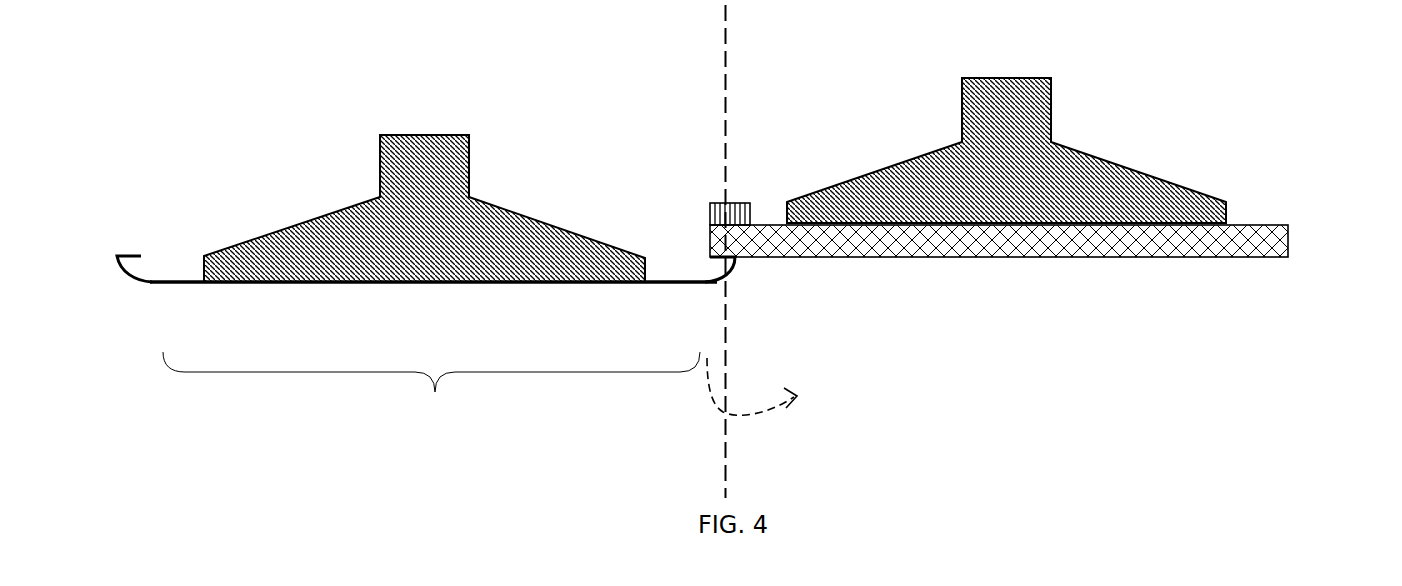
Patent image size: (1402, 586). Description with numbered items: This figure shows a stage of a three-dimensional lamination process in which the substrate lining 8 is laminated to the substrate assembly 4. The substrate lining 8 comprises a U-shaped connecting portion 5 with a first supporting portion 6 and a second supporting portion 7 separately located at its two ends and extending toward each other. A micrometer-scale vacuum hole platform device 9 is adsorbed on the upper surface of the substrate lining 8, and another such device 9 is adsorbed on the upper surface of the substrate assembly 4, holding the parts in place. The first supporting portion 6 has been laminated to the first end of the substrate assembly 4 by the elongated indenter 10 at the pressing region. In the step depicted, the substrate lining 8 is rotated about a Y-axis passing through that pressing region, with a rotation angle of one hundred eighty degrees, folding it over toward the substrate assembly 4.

The substrate assembly 4 is at (1288, 243).
The U-shaped connecting portion 5 is at (413, 283).
The first supporting portion 6 is at (715, 257).
The second supporting portion 7 is at (139, 256).
The substrate lining 8 is at (431, 392).
The micrometer-scale vacuum hole platform device 9 is at (1052, 108).
The elongated indenter 10 is at (720, 203).